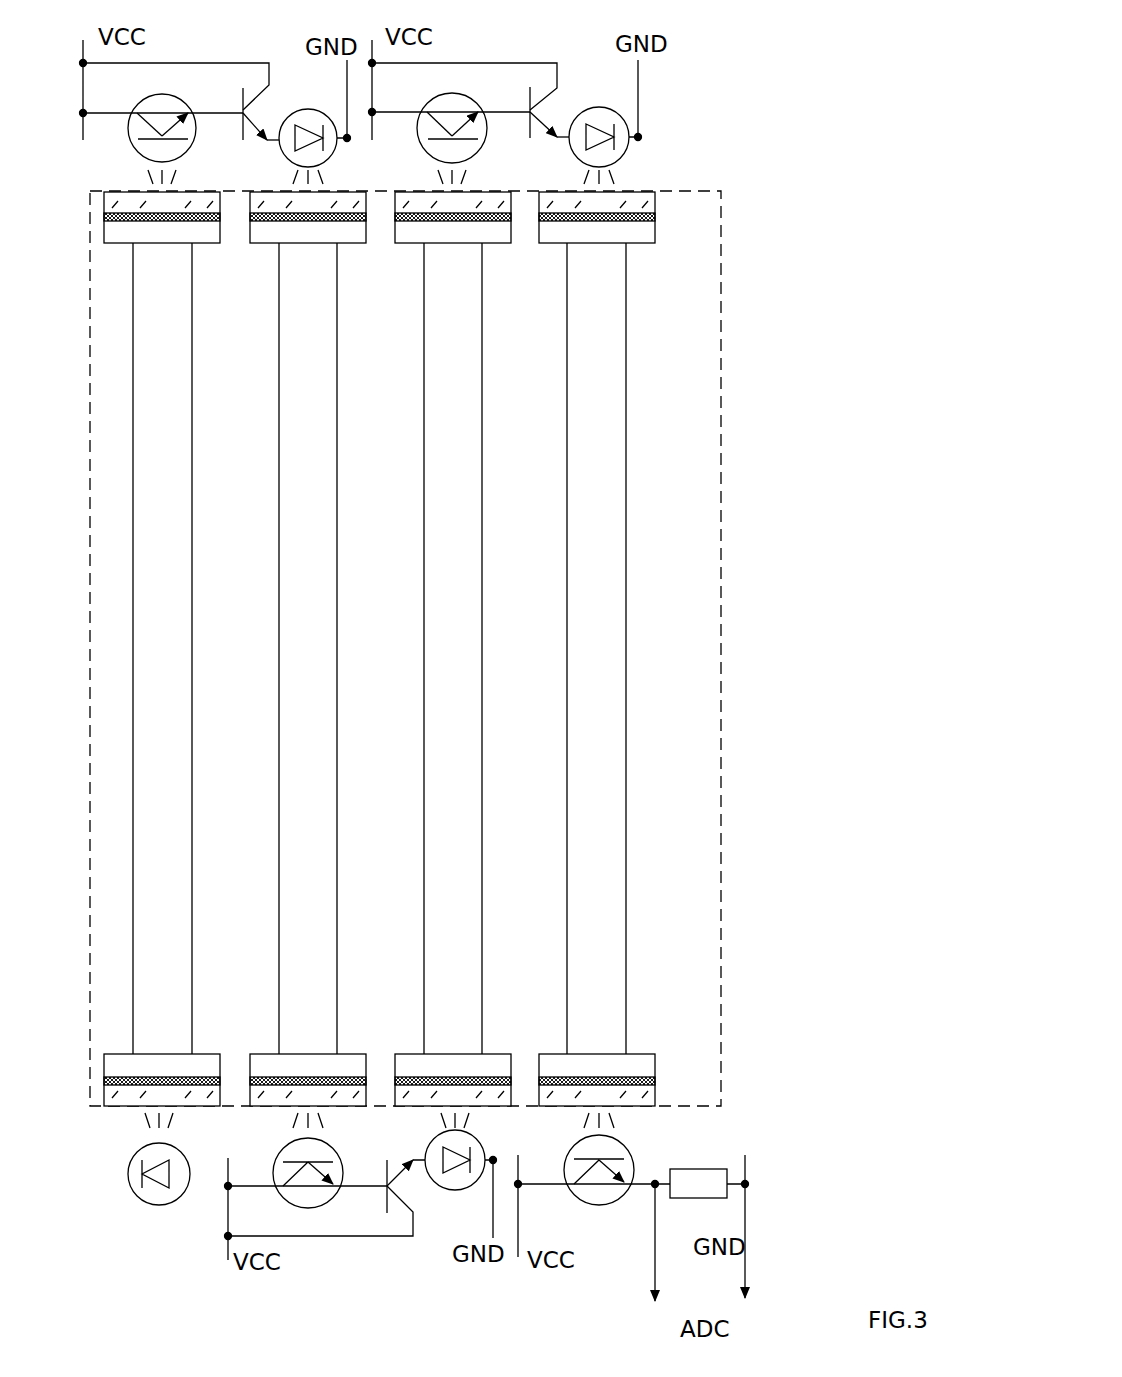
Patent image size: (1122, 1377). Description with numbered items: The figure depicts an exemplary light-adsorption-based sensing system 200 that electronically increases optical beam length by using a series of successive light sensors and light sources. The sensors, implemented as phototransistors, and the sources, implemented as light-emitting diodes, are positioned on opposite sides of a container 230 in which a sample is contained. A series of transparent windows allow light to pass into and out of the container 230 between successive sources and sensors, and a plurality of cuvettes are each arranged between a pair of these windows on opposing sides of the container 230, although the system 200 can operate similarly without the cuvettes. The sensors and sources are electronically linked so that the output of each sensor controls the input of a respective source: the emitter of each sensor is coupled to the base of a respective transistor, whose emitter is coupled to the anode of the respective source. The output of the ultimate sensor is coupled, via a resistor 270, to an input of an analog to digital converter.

The system 200 is at (757, 25).
The container 230 is at (721, 268).
The resistor 270 is at (685, 1169).